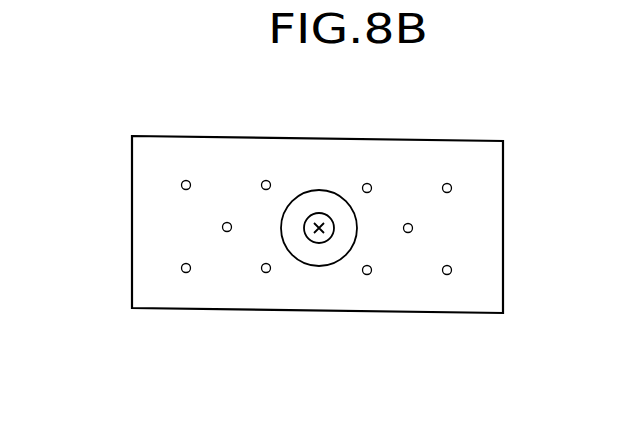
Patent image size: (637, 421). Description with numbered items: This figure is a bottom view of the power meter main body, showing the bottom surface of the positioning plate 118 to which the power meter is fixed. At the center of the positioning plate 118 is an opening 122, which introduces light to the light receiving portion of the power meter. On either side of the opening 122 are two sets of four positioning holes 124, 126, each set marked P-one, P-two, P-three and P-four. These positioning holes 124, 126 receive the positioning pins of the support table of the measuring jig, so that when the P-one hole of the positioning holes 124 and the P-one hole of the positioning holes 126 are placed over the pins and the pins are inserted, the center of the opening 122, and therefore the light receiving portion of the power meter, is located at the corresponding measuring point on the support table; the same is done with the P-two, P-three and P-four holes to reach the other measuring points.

The positioning plate 118 is at (483, 222).
The opening 122 is at (318, 243).
The positioning holes 124 is at (266, 263).
The positioning holes 126 is at (443, 187).